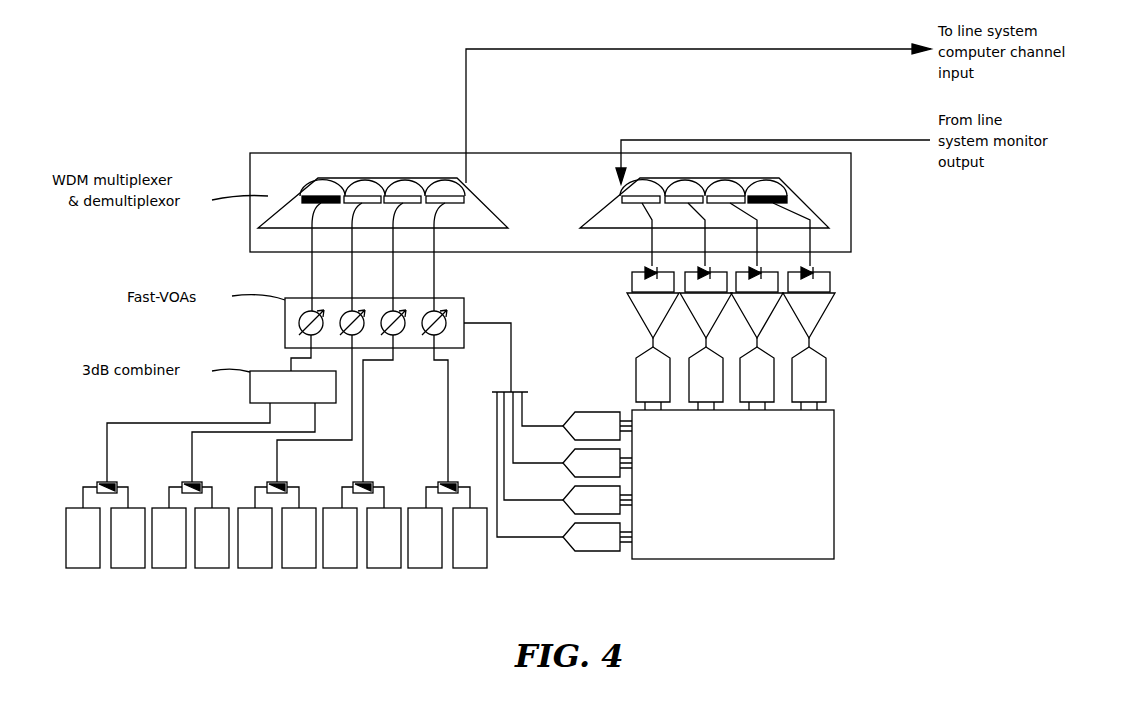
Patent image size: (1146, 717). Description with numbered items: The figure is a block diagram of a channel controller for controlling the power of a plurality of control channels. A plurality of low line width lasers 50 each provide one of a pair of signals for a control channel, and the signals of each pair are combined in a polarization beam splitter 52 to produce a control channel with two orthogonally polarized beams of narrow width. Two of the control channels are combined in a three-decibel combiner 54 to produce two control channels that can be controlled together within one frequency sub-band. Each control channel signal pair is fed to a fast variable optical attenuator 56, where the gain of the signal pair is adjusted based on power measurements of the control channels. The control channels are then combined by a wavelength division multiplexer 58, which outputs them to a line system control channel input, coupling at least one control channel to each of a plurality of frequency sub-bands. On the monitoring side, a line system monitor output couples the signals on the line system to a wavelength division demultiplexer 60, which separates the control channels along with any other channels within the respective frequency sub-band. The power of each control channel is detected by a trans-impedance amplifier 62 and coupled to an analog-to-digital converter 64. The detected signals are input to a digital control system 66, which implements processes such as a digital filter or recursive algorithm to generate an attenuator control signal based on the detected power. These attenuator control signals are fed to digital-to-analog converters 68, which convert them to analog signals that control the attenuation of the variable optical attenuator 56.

The low line width lasers 50 is at (128, 568).
The polarization beam splitter 52 is at (100, 483).
The 3 dB combiner 54 is at (250, 388).
The fast variable optical attenuator 56 is at (285, 323).
The wavelength division multiplexer 58 is at (488, 214).
The wavelength division demultiplexer 60 is at (798, 205).
The trans-impedance amplifier 62 is at (838, 300).
The analog-to-digital converter 64 is at (830, 358).
The digital control system 66 is at (733, 484).
The digital-to-analog converters 68 is at (600, 552).